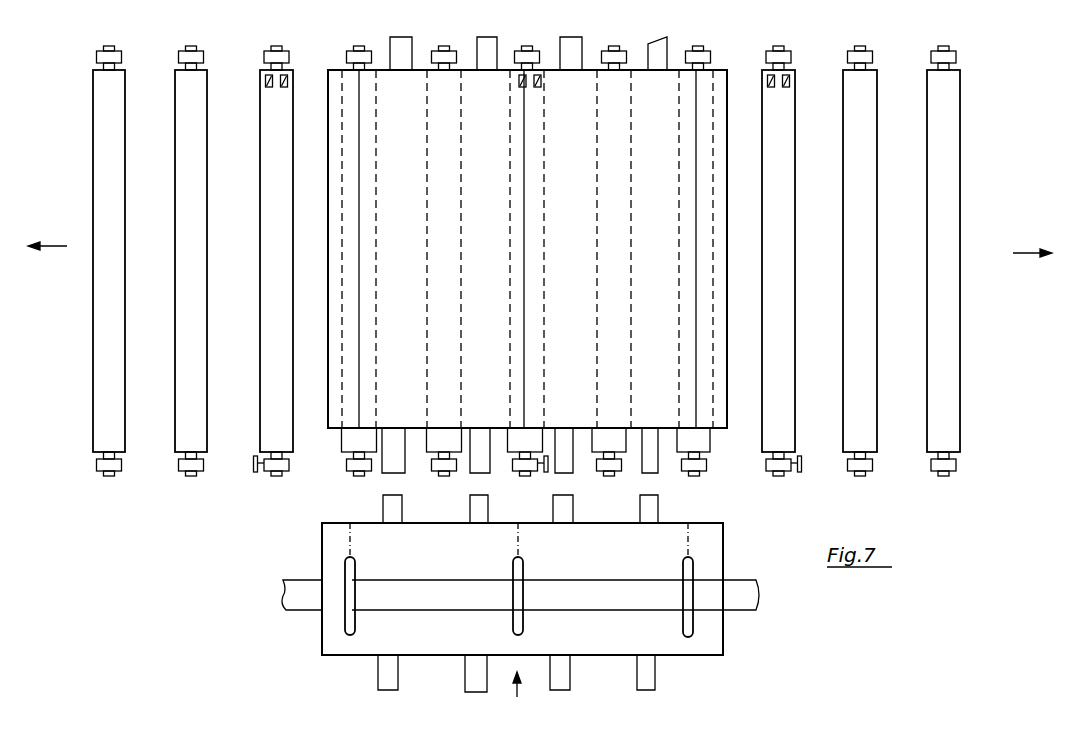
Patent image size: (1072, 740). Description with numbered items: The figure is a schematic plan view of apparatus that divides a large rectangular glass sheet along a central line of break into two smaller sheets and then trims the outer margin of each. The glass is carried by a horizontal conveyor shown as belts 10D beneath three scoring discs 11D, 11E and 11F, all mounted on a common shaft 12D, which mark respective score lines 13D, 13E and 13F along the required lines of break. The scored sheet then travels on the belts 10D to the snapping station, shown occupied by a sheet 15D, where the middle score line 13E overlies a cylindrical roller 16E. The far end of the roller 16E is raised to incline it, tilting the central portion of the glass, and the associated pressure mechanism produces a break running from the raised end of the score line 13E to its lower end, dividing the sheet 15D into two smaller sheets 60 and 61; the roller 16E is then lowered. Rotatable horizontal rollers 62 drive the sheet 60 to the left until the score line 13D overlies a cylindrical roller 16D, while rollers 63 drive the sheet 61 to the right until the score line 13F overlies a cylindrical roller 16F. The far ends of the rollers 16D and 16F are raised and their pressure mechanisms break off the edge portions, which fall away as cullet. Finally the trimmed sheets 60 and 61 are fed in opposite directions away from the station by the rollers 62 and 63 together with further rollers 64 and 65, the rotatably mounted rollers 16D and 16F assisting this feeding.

The belts 10D is at (465, 677).
The scoring disc 11D is at (355, 575).
The scoring disc 11E is at (522, 576).
The scoring disc 11F is at (692, 577).
The common shaft 12D is at (750, 583).
The score line 13D is at (359, 152).
The middle score line 13E is at (524, 168).
The score line 13F is at (695, 158).
The glass sheet 15D is at (339, 69).
The cylindrical roller 16D is at (259, 333).
The cylindrical roller 16E is at (543, 277).
The cylindrical roller 16F is at (795, 338).
The smaller sheet 60 is at (418, 108).
The smaller sheet 61 is at (580, 108).
The rotatable horizontal rollers 62 is at (426, 249).
The rotatable horizontal rollers 63 is at (630, 277).
The further rollers 64 is at (175, 345).
The further rollers 65 is at (877, 338).